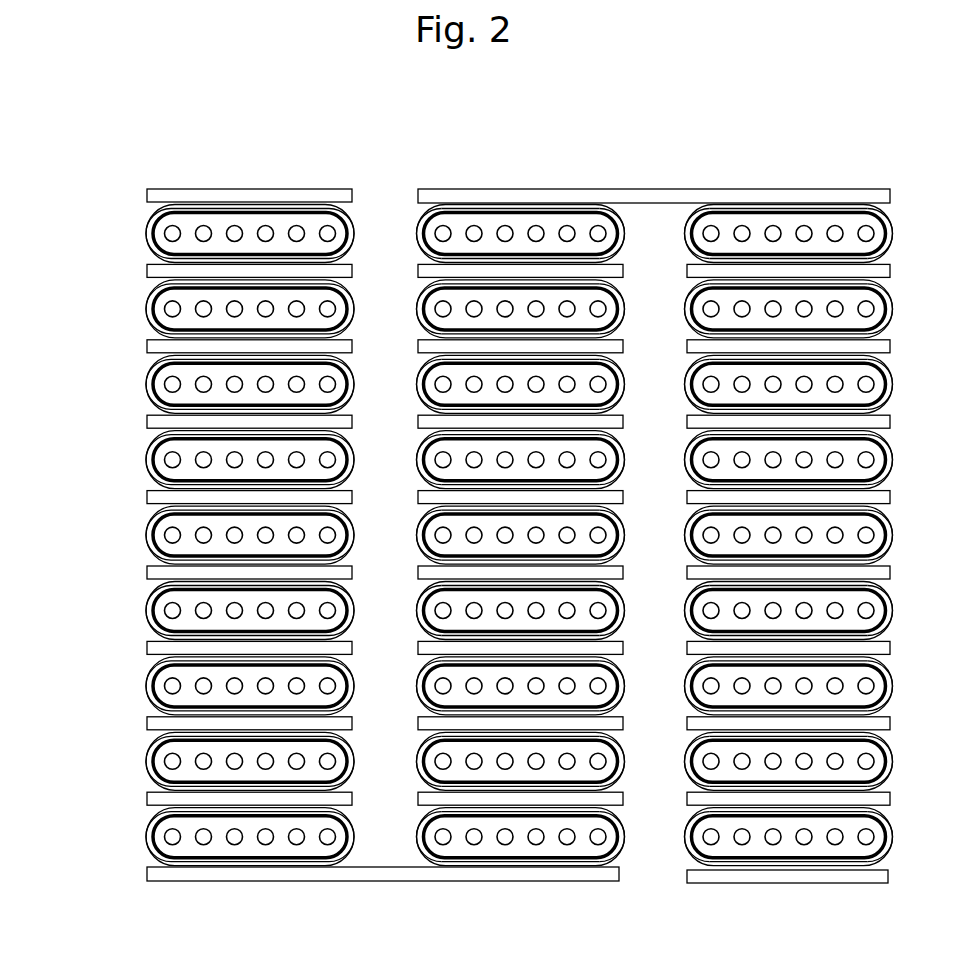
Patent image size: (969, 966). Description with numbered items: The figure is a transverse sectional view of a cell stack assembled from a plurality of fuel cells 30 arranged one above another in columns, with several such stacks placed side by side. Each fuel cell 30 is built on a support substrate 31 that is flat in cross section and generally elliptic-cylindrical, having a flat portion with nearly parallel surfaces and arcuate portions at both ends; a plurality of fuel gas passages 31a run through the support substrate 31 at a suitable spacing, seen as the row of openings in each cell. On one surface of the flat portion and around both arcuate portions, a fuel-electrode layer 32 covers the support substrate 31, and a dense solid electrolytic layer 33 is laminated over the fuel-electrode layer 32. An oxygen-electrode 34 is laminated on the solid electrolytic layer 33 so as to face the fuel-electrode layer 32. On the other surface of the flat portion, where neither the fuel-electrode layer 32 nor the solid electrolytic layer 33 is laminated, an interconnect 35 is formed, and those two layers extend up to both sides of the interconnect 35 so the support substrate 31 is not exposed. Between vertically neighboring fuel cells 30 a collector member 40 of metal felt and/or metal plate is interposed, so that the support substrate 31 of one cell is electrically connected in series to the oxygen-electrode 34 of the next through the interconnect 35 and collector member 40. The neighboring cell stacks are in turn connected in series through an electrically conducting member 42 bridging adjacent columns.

The fuel cell 30 is at (447, 501).
The support substrate 31 is at (158, 308).
The fuel gas passages 31a is at (235, 226).
The fuel-electrode layer 32 is at (142, 694).
The solid electrolytic layer 33 is at (147, 228).
The oxygen-electrode 34 is at (152, 338).
The interconnect 35 is at (155, 357).
The collector member 40 is at (300, 195).
The electrically conducting member 42 is at (663, 193).